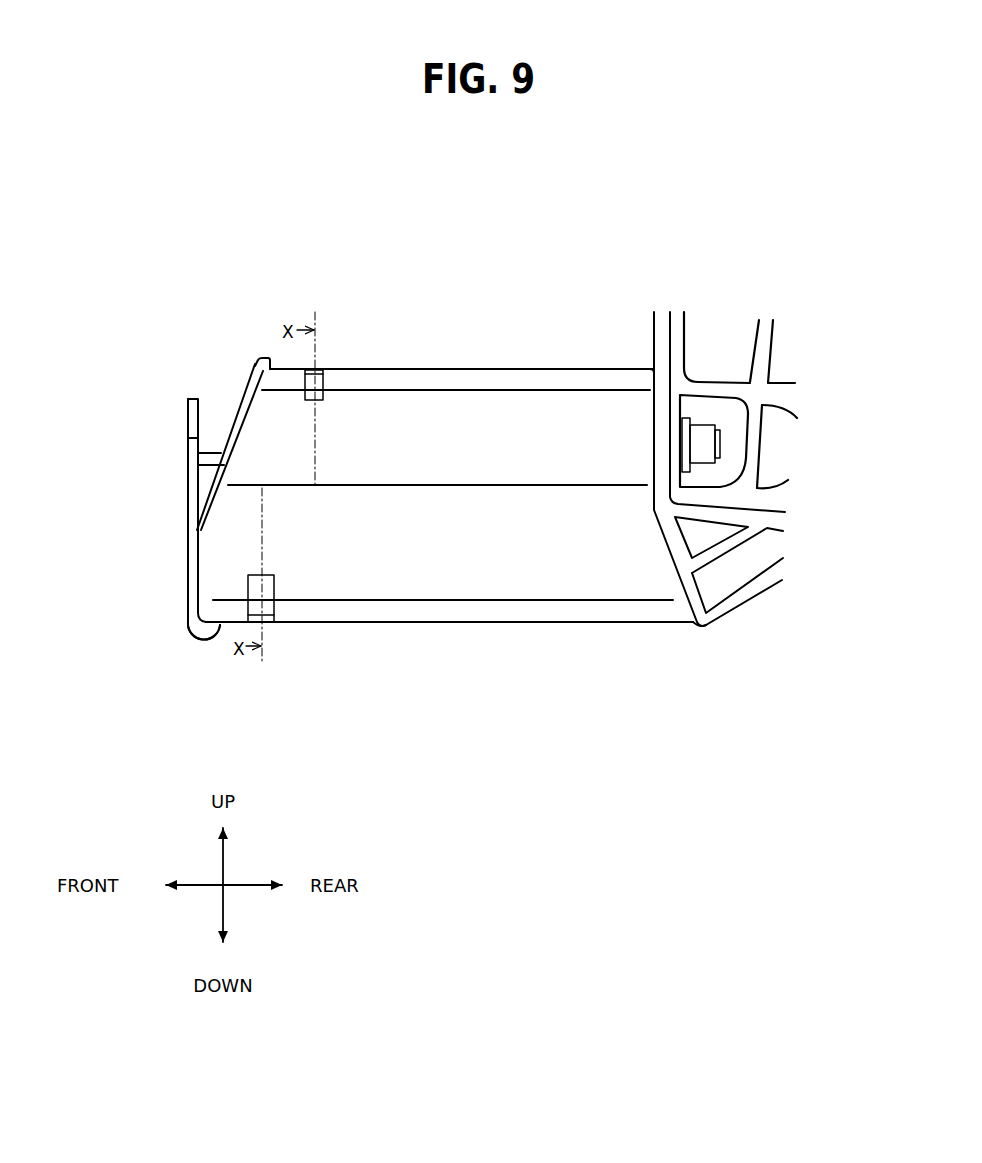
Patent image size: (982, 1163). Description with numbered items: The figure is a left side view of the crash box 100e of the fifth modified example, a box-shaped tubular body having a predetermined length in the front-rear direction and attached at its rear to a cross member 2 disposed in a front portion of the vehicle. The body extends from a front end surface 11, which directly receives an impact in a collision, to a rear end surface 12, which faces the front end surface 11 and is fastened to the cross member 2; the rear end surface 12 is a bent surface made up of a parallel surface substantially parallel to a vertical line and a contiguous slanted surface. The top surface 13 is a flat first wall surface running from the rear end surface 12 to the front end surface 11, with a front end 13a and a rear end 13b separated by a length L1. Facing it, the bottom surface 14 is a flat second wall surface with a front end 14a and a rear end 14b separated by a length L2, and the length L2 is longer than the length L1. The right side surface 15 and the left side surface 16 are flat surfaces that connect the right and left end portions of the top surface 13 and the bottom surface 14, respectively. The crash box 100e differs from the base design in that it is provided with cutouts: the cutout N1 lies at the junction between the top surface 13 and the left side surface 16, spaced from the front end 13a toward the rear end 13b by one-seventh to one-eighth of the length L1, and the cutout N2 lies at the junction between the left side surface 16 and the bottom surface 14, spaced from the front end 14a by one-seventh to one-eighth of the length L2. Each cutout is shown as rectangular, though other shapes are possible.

The crash box 100e is at (582, 261).
The cross member 2 is at (768, 335).
The front end surface 11 is at (188, 483).
The rear end surface 12 is at (655, 476).
The top surface 13 is at (468, 368).
The front end 13a is at (258, 359).
The rear end 13b is at (653, 365).
The bottom surface 14 is at (467, 625).
The front end 14a is at (190, 633).
The rear end 14b is at (690, 630).
The right side surface 15 is at (398, 368).
The left side surface 16 is at (486, 458).
The cutout N1 is at (318, 368).
The cutout N2 is at (268, 625).
The length of the top surface L1 is at (654, 312).
The length of the bottom surface L2 is at (695, 712).